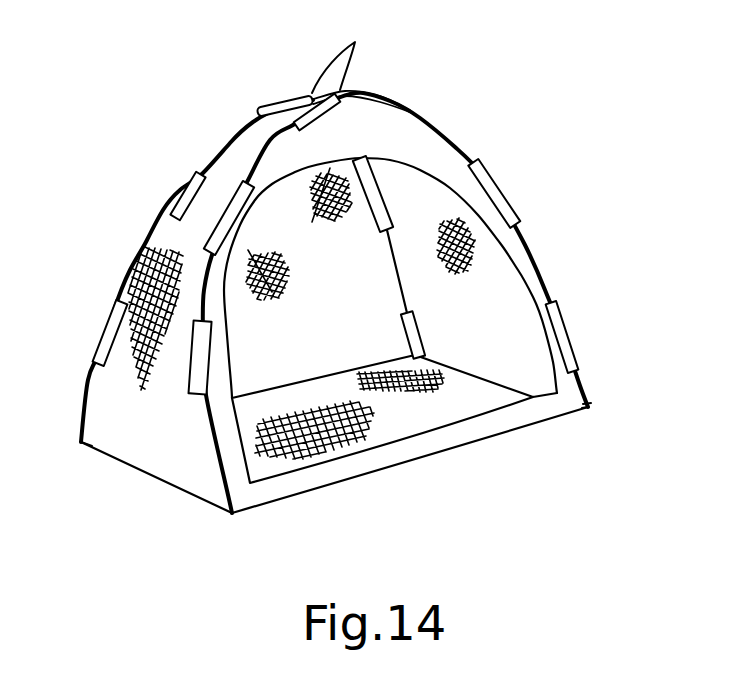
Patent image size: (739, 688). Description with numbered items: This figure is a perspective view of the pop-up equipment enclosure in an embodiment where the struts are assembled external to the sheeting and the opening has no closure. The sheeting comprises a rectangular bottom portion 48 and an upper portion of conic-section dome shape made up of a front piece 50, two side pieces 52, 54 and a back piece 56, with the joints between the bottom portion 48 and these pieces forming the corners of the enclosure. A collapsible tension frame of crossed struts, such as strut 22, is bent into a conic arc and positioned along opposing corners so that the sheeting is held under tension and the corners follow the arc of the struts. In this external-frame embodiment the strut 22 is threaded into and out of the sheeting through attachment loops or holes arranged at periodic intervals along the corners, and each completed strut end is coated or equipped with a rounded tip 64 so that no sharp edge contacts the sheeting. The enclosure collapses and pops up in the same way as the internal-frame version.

The strut 22 is at (356, 40).
The rectangular bottom portion 48 is at (433, 397).
The front piece 50 is at (230, 458).
The side piece 52 is at (498, 342).
The side piece 54 is at (132, 423).
The back piece 56 is at (278, 357).
The tip 64 is at (263, 152).